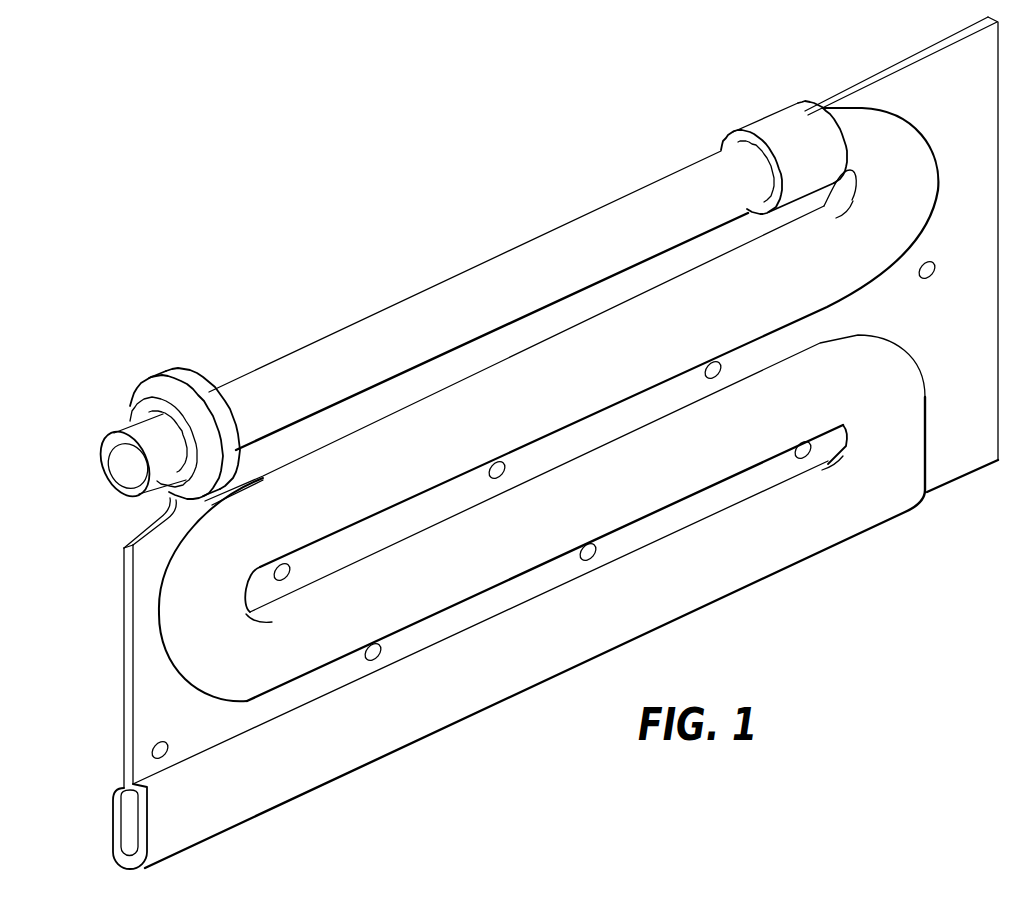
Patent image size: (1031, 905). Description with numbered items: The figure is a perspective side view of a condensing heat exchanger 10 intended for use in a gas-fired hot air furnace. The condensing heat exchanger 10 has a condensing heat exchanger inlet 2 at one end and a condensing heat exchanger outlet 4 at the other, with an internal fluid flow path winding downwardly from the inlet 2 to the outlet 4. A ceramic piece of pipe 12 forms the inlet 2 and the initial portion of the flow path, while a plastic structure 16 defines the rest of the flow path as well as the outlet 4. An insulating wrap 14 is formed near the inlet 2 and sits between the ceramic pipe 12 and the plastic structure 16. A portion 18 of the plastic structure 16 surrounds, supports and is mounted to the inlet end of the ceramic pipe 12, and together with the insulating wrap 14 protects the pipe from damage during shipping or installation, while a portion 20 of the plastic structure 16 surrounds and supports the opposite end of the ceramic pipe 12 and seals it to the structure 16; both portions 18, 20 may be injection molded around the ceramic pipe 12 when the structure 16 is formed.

The condensing heat exchanger 10 is at (381, 207).
The condensing heat exchanger inlet 2 is at (123, 467).
The condensing heat exchanger outlet 4 is at (125, 822).
The ceramic pipe 12 is at (318, 356).
The insulating wrap 14 is at (157, 413).
The plastic structure 16 is at (777, 558).
The portion of the plastic structure 18 is at (217, 415).
The portion of the plastic structure 20 is at (726, 145).